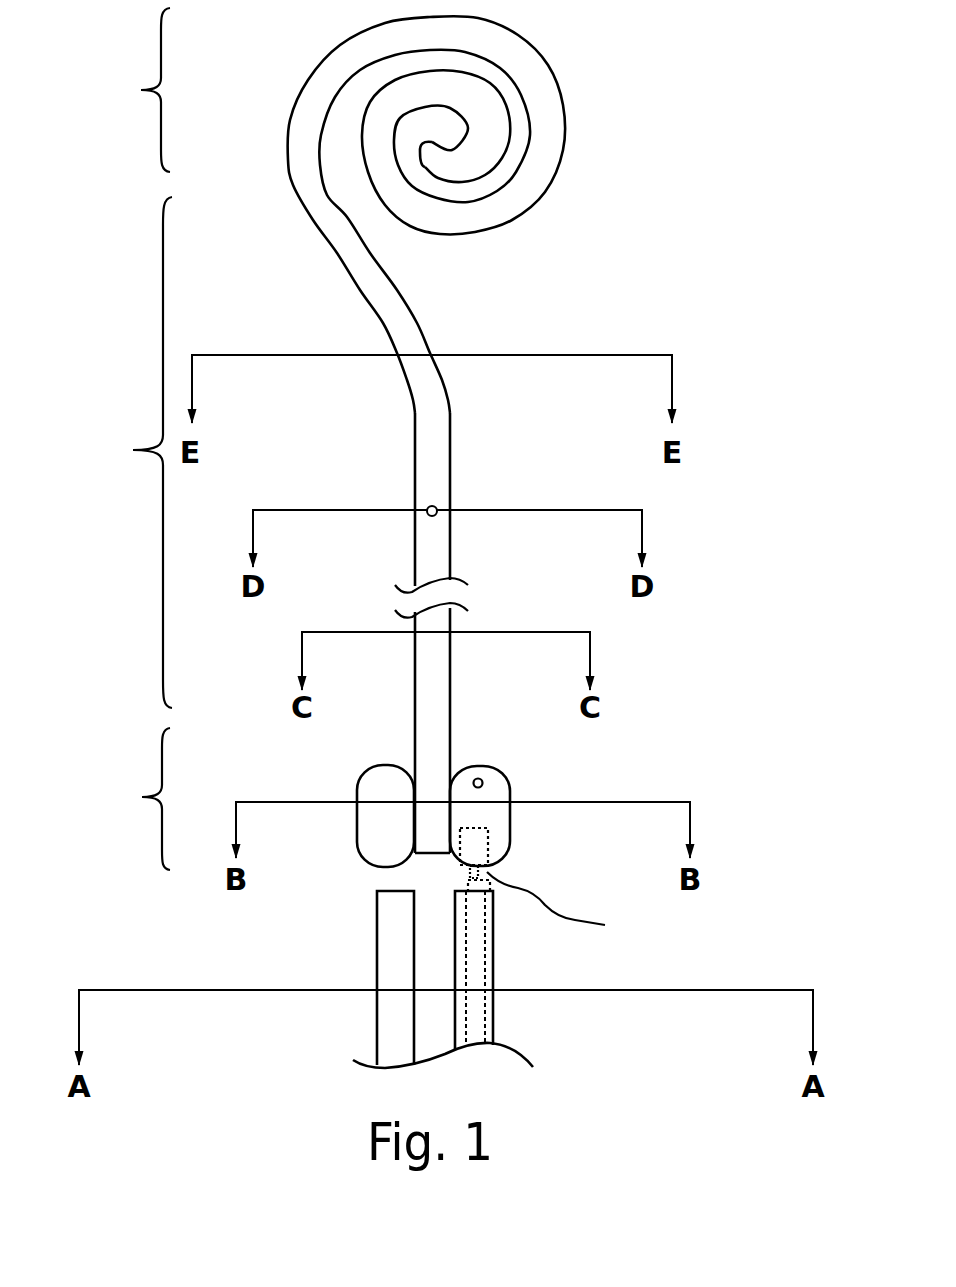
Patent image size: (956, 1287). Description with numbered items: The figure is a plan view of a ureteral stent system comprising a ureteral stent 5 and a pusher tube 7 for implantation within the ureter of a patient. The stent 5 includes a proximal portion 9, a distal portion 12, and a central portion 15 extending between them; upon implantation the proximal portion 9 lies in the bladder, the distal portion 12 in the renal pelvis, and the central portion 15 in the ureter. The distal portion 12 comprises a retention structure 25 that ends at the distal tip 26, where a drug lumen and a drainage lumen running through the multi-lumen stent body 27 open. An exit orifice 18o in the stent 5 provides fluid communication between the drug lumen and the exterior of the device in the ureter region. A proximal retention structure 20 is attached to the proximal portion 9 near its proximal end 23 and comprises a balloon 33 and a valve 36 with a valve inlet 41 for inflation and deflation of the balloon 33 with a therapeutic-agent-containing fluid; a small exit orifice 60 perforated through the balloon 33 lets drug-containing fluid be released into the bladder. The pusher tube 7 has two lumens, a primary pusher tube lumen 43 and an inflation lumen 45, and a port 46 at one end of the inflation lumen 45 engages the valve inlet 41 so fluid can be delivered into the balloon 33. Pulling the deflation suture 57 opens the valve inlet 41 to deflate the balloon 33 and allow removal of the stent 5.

The ureteral stent 5 is at (538, 555).
The pusher tube 7 is at (377, 1024).
The proximal portion 9 is at (144, 799).
The distal portion 12 is at (135, 90).
The central portion 15 is at (131, 452).
The exit orifice 18o is at (436, 508).
The proximal retention structure 20 is at (542, 767).
The proximal end 23 is at (430, 856).
The retention structure 25 is at (552, 78).
The distal tip 26 is at (427, 147).
The multi-lumen stent body 27 is at (450, 418).
The balloon 33 is at (357, 800).
The valve 36 is at (488, 829).
The valve inlet 41 is at (488, 865).
The primary pusher tube lumen 43 is at (435, 955).
The inflation lumen 45 is at (475, 1013).
The port 46 is at (492, 891).
The deflation suture 57 is at (568, 908).
The exit orifice 60 is at (480, 778).